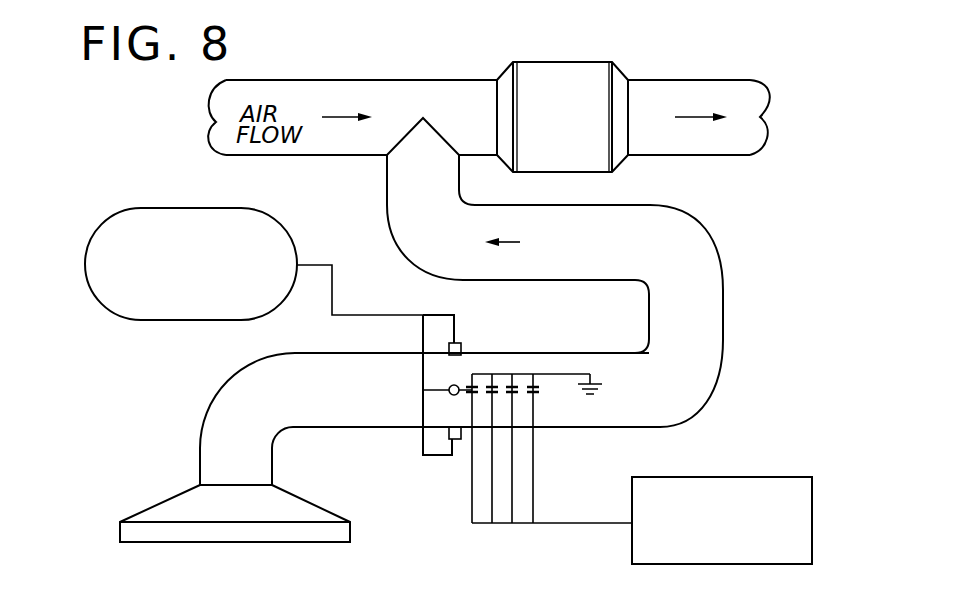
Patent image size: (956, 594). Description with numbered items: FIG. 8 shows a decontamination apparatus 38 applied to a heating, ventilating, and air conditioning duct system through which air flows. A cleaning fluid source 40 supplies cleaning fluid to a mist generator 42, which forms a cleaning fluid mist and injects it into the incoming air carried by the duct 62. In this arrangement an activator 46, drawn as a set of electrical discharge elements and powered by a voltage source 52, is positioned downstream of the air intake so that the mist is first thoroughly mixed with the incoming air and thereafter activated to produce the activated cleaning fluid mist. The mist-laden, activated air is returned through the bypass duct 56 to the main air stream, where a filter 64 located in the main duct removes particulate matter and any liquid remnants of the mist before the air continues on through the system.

The decontamination apparatus 38 is at (390, 343).
The cleaning fluid source 40 is at (137, 208).
The mist generator 42 is at (463, 350).
The activator 46 is at (513, 396).
The voltage source 52 is at (788, 477).
The bypass pipe 56 is at (674, 430).
The exhaust outlet pipe 62 is at (300, 352).
The filter 64 is at (587, 62).